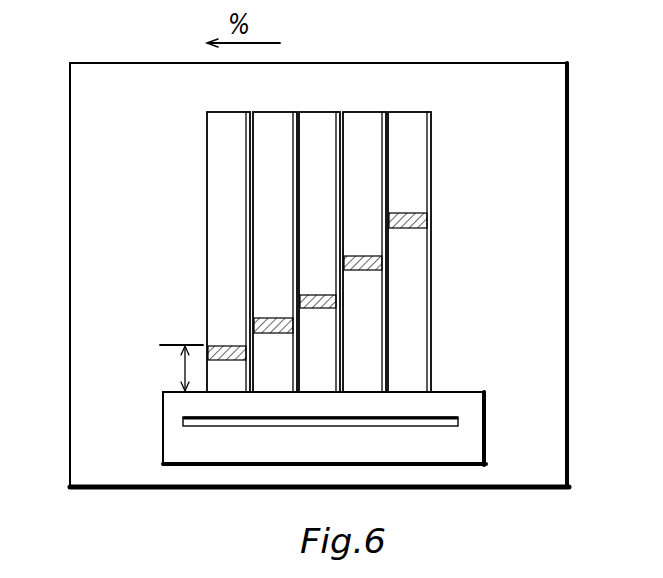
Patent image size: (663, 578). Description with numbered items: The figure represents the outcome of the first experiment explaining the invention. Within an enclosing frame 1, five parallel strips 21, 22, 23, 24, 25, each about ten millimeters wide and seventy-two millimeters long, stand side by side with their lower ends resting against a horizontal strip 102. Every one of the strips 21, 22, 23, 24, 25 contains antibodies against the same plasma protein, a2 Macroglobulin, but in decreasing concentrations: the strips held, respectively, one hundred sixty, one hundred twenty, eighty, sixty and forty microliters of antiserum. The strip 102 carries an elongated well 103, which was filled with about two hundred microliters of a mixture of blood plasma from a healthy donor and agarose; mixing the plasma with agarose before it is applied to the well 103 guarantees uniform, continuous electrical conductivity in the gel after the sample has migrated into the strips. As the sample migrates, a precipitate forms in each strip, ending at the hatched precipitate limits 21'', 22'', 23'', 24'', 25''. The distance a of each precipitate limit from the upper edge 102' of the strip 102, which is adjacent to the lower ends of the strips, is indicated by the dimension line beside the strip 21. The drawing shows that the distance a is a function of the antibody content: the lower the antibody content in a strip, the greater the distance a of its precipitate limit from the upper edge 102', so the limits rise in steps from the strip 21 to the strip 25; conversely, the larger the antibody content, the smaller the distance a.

The housing 1 is at (552, 121).
The strip 21 is at (228, 229).
The strip 22 is at (275, 229).
The strip 23 is at (319, 229).
The strip 24 is at (364, 229).
The strip 25 is at (409, 229).
The precipitate limit 21'' is at (227, 316).
The precipitate limit 22'' is at (273, 292).
The precipitate limit 23'' is at (318, 262).
The precipitate limit 24'' is at (363, 228).
The precipitate limit 25'' is at (408, 189).
The upper edge 102' is at (338, 393).
The strip 102 is at (323, 483).
The well 103 is at (222, 426).
The distance a is at (185, 372).